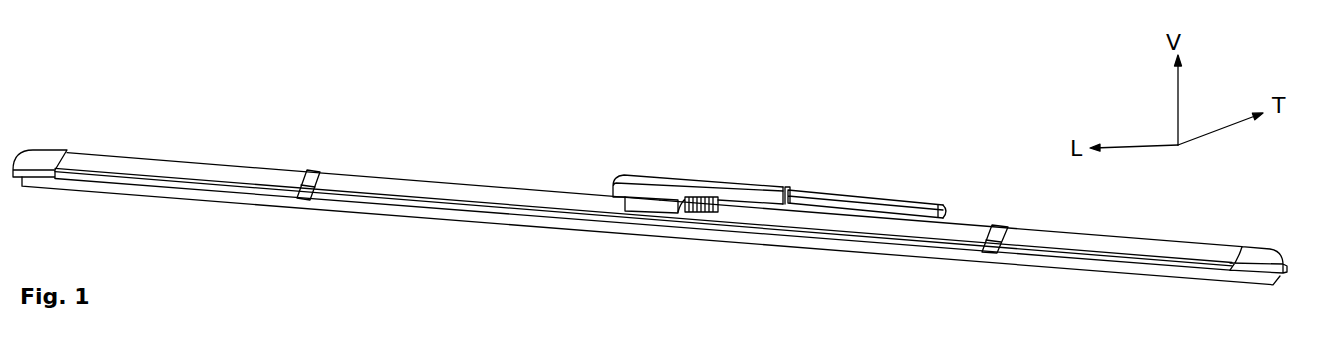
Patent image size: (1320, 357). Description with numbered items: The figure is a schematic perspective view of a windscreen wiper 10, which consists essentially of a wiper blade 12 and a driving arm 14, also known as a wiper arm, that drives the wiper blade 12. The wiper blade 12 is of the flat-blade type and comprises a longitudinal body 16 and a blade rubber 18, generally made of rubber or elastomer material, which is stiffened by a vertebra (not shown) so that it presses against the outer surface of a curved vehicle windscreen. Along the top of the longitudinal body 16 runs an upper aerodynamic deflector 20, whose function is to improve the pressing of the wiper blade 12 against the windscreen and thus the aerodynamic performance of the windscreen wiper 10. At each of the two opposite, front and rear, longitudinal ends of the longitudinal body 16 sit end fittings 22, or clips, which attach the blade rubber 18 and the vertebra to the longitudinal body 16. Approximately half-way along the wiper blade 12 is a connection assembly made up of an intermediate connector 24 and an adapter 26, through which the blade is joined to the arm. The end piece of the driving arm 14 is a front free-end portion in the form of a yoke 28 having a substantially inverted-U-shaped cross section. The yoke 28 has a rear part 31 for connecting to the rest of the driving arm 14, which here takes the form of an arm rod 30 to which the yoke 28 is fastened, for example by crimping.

The windscreen wiper 10 is at (363, 157).
The wiper blade 12 is at (191, 203).
The driving arm 14 is at (824, 178).
The longitudinal body 16 is at (1066, 245).
The blade rubber 18 is at (362, 214).
The upper aerodynamic deflector 20 is at (175, 163).
The end fittings 22 is at (47, 166).
The intermediate connector 24 is at (648, 214).
The adapter 26 is at (708, 218).
The yoke 28 is at (661, 188).
The arm rod 30 is at (930, 206).
The rear part 31 is at (747, 192).